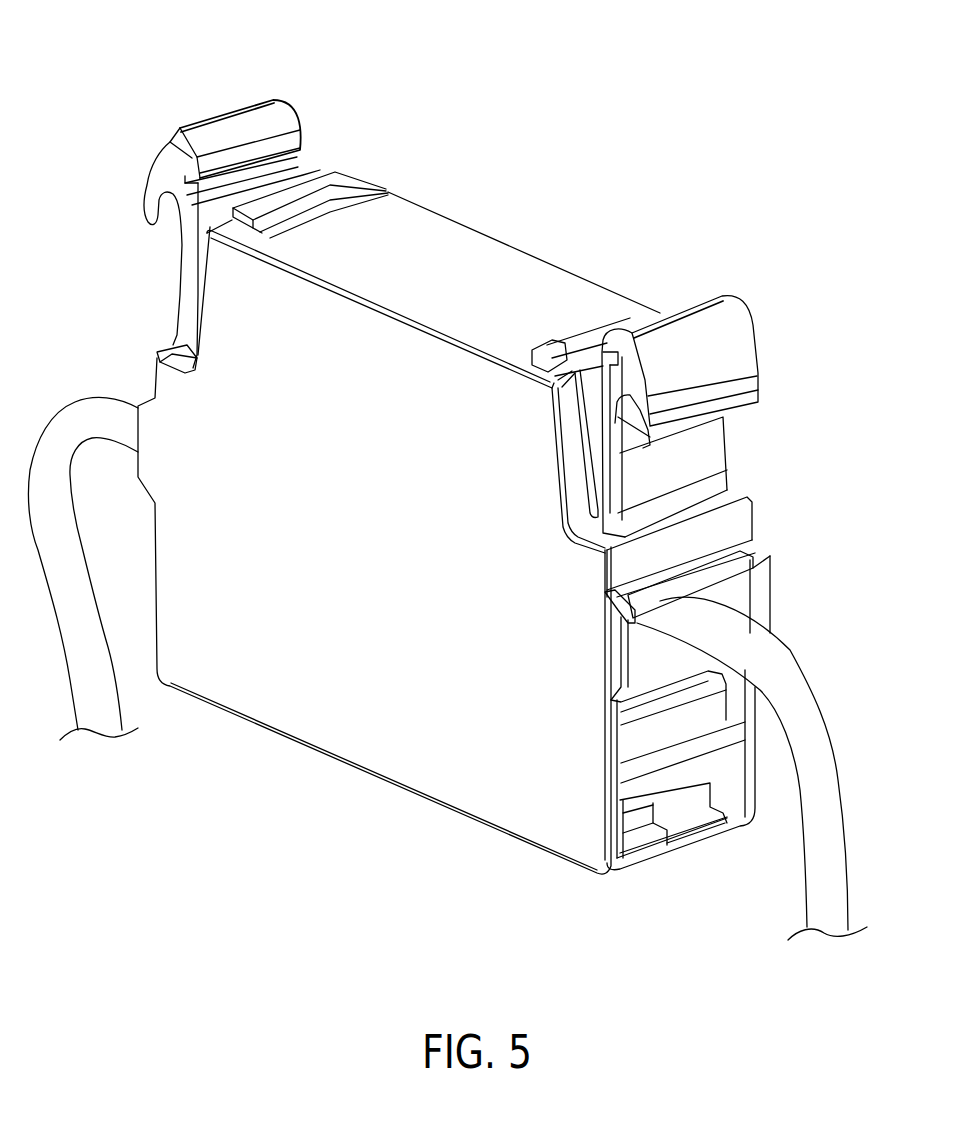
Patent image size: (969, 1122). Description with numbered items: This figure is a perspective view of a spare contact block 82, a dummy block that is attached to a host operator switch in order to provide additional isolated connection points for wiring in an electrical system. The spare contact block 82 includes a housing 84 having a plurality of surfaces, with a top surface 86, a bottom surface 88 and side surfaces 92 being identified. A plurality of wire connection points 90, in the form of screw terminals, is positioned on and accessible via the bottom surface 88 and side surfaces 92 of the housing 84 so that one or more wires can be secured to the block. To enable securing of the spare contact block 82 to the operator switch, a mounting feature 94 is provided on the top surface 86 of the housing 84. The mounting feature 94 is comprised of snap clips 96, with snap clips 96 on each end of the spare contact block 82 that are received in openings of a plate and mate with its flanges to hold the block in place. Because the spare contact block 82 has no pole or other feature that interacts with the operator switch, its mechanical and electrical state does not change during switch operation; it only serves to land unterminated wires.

The spare contact block 82 is at (459, 443).
The housing 84 is at (802, 484).
The top surface 86 is at (502, 226).
The bottom surface 88 is at (259, 780).
The wire connection points 90 is at (792, 623).
The side surfaces 92 is at (135, 193).
The mounting feature 94 is at (193, 92).
The snap clips 96 is at (180, 130).